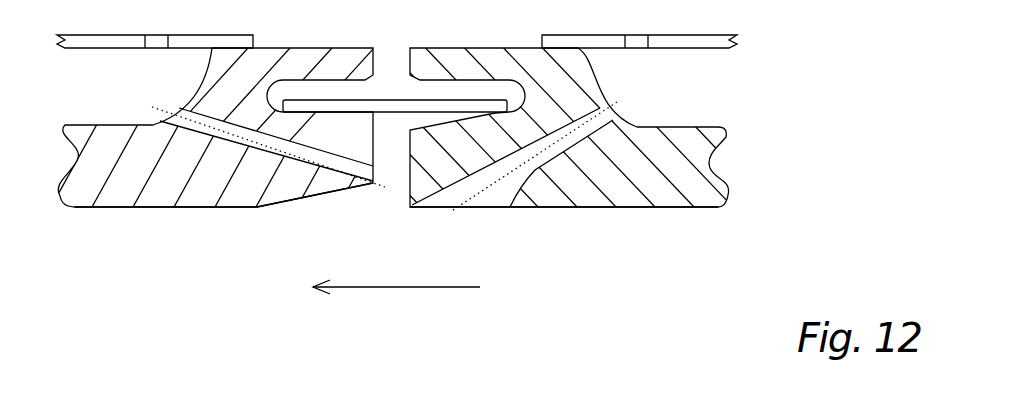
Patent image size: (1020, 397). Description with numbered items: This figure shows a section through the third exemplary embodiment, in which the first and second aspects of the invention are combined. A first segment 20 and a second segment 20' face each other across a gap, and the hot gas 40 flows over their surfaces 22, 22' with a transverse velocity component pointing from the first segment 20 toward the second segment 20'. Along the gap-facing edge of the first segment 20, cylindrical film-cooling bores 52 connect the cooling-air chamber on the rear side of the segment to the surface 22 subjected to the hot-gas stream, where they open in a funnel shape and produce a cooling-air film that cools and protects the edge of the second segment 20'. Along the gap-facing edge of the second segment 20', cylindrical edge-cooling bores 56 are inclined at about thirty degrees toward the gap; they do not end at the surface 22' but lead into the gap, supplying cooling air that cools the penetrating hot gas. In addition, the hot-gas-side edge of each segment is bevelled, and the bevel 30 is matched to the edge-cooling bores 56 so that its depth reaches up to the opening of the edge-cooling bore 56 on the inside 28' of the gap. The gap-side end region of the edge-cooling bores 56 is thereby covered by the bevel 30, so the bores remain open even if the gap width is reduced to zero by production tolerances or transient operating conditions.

The first segment 20 is at (570, 127).
The second segment 20' is at (210, 127).
The surface subjected to the hot-gas stream 22 is at (564, 228).
The surface subjected to the hot-gas stream 22' is at (156, 240).
The inside of the gap 28' is at (395, 133).
The bevel 30 is at (312, 203).
The hot gas flow 40 is at (396, 302).
The film-cooling bores 52 is at (523, 173).
The edge-cooling bores 56 is at (197, 203).